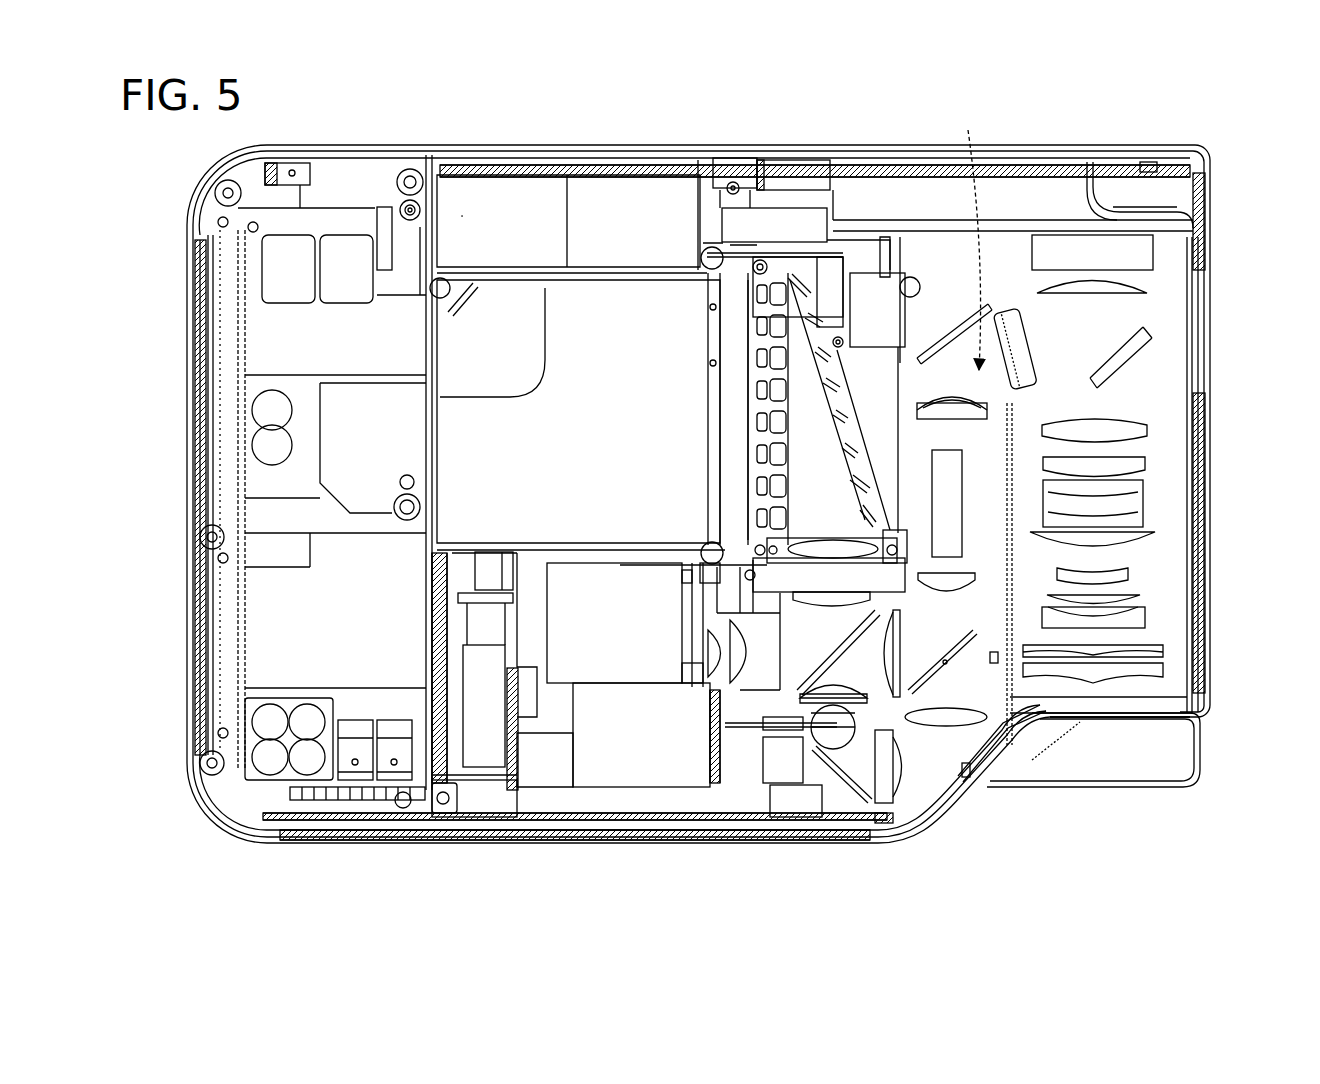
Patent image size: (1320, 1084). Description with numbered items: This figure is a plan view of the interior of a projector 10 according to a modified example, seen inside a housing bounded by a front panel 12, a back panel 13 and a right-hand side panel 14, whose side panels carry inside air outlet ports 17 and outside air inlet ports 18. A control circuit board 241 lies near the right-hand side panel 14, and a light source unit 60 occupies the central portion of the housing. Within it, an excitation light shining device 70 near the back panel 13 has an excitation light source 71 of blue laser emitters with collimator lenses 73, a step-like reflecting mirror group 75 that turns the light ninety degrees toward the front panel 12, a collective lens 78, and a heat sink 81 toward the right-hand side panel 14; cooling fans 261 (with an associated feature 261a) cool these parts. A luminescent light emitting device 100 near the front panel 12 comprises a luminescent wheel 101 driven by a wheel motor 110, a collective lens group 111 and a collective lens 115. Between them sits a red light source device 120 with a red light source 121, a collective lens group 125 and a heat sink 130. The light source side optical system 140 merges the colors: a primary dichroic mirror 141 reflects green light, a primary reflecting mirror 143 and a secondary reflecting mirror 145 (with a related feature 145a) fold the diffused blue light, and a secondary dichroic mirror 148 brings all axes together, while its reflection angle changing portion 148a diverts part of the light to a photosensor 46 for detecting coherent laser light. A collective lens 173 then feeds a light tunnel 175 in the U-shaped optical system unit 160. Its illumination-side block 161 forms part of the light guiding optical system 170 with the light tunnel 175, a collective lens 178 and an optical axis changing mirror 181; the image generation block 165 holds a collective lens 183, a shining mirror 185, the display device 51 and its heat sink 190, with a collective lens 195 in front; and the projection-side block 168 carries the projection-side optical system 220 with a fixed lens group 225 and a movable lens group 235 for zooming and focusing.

The projector 10 is at (1218, 138).
The front panel 12 is at (348, 836).
The back panel 13 is at (565, 172).
The right-hand side panel 14 is at (197, 362).
The inside air outlet ports 17 is at (196, 399).
The outside air inlet ports 18 is at (518, 168).
The photosensor 46 is at (1000, 658).
The display device 51 is at (1208, 222).
The light source unit 60 is at (688, 463).
The excitation light shining device 70 is at (740, 182).
The excitation light source 71 is at (748, 390).
The collimator lenses 73 is at (748, 355).
The reflecting mirror group 75 is at (825, 423).
The collective lens 78 is at (820, 545).
The heat sink 81 is at (608, 375).
The luminescent light emitting device 100 is at (780, 792).
The luminescent wheel 101 is at (700, 800).
The wheel motor 110 is at (790, 820).
The collective lens group 111 is at (952, 772).
The collective lens 115 is at (875, 792).
The red light source device 120 is at (687, 690).
The red light source 121 is at (692, 643).
The collective lens group 125 is at (715, 615).
The heat sink 130 is at (580, 632).
The light source side optical system 140 is at (1133, 720).
The primary dichroic mirror 141 is at (812, 667).
The primary reflecting mirror 143 is at (858, 722).
The secondary reflecting mirror 145 is at (1077, 720).
The barrel flange 145a is at (982, 780).
The secondary dichroic mirror 148 is at (977, 632).
The reflection angle changing portion 148a is at (944, 663).
The optical system unit 160 is at (1143, 718).
The illumination-side block 161 is at (1023, 320).
The image generation block 165 is at (1145, 312).
The projection-side block 168 is at (1162, 478).
The light guiding optical system 170 is at (971, 228).
The collective lens 173 is at (953, 587).
The light tunnel 175 is at (950, 542).
The collective lens 178 is at (953, 397).
The optical axis changing mirror 181 is at (966, 292).
The collective lens 183 is at (1027, 327).
The shining mirror 185 is at (1120, 362).
The heat sink 190 is at (1058, 193).
The collective lens 195 is at (1140, 268).
The projection-side optical system 220 is at (1162, 508).
The fixed lens group 225 is at (1190, 778).
The movable lens group 235 is at (1162, 452).
The control circuit board 241 is at (310, 578).
The cooling fan 261 is at (669, 215).
The screw hole 261a is at (462, 215).